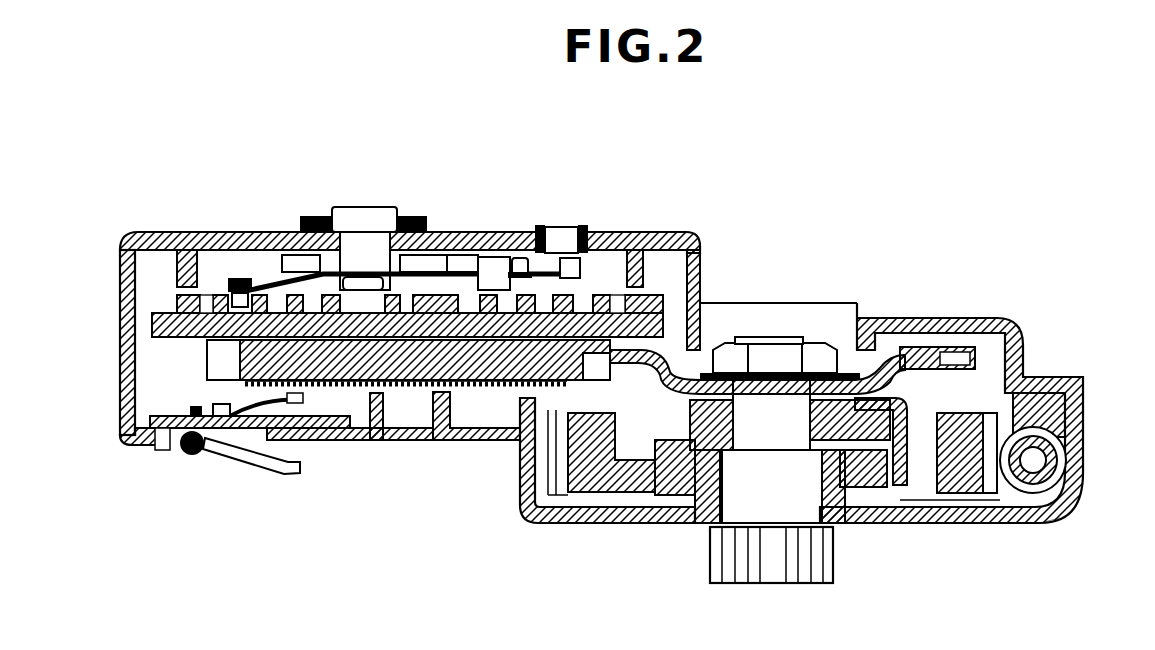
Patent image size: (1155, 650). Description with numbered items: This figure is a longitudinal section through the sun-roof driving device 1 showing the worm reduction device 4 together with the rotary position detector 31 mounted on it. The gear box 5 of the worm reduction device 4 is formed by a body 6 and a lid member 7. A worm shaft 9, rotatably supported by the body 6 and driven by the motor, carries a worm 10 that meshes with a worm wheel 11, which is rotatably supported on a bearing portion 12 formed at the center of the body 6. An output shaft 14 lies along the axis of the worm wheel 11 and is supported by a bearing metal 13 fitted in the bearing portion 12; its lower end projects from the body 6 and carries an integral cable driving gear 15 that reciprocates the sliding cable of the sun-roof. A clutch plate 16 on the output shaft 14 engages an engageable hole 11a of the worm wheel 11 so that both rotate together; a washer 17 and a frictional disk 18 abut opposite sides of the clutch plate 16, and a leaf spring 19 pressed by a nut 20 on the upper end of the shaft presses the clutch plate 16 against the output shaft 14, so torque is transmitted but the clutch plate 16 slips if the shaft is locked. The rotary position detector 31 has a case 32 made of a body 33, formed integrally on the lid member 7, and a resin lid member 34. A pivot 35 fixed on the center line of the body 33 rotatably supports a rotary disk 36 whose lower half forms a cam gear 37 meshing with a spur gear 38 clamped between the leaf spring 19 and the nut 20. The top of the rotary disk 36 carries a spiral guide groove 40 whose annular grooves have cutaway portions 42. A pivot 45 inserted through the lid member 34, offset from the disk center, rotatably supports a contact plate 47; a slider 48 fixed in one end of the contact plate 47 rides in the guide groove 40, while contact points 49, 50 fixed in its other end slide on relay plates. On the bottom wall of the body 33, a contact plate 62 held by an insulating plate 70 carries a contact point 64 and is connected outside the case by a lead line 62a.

The sun-roof driving device 1 is at (762, 166).
The worm reduction device 4 is at (955, 500).
The gear box 5 is at (991, 535).
The body 6 is at (1040, 525).
The lid member 7 is at (1000, 318).
The worm shaft 9 is at (1045, 457).
The worm 10 is at (1068, 470).
The worm wheel 11 is at (552, 480).
The engageable hole 11a is at (590, 482).
The bearing portion 12 is at (678, 474).
The bearing metal 13 is at (705, 489).
The output shaft 14 is at (785, 517).
The cable driving gear 15 is at (815, 565).
The clutch plate 16 is at (640, 474).
The washer 17 is at (882, 472).
The frictional disk 18 is at (905, 406).
The leaf spring 19 is at (873, 396).
The nut 20 is at (822, 356).
The rotary position detector 31 is at (116, 261).
The case 32 is at (112, 398).
The body 33 is at (120, 436).
The lid member 34 is at (140, 232).
The pivot 35 is at (415, 434).
The rotary disk 36 is at (143, 328).
The cam gear 37 is at (205, 360).
The spur gear 38 is at (940, 357).
The guide groove 40 is at (215, 290).
The cutaway portion 42 is at (613, 292).
The pivot 45 is at (368, 207).
The contact plate 47 is at (452, 268).
The slider 48 is at (243, 292).
The contact point 49 is at (515, 258).
The contact point 50 is at (616, 306).
The contact plate 62 is at (345, 430).
The lead line 62a is at (241, 457).
The contact point 64 is at (320, 441).
The insulating plate 70 is at (163, 442).